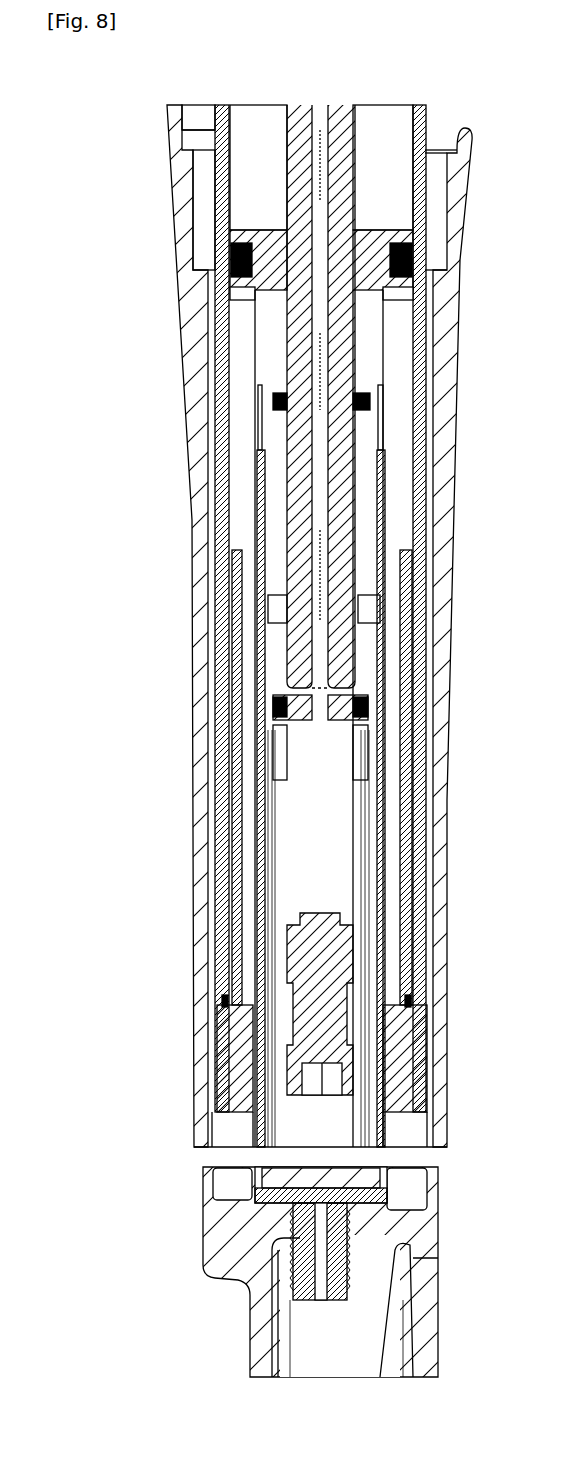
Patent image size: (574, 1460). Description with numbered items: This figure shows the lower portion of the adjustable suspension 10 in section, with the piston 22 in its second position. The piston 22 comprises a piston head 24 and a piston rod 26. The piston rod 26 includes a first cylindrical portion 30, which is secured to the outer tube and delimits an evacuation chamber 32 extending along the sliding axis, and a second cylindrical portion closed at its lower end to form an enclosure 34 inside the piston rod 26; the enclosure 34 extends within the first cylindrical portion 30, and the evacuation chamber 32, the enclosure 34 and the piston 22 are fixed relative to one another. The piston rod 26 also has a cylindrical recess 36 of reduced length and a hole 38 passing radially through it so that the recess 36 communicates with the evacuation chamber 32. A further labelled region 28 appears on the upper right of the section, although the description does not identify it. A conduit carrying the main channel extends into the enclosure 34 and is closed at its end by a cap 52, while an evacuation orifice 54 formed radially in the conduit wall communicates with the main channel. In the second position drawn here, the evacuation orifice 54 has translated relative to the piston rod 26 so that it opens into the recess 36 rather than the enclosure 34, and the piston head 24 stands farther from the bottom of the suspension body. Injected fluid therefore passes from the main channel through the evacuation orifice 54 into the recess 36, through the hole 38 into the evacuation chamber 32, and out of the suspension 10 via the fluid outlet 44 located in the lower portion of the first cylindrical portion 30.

The adjustable suspension 10 is at (170, 509).
The piston 22 is at (385, 290).
The piston head 24 is at (268, 228).
The piston rod 26 is at (385, 343).
The cavity 28 is at (372, 172).
The first cylindrical portion 30 is at (382, 1167).
The evacuation chamber 32 is at (393, 1180).
The enclosure 34 is at (313, 1136).
The cylindrical recess 36 is at (380, 513).
The hole 38 is at (380, 588).
The fluid outlet 44 is at (347, 1262).
The cap 52 is at (323, 1028).
The evacuation orifice 54 is at (380, 692).